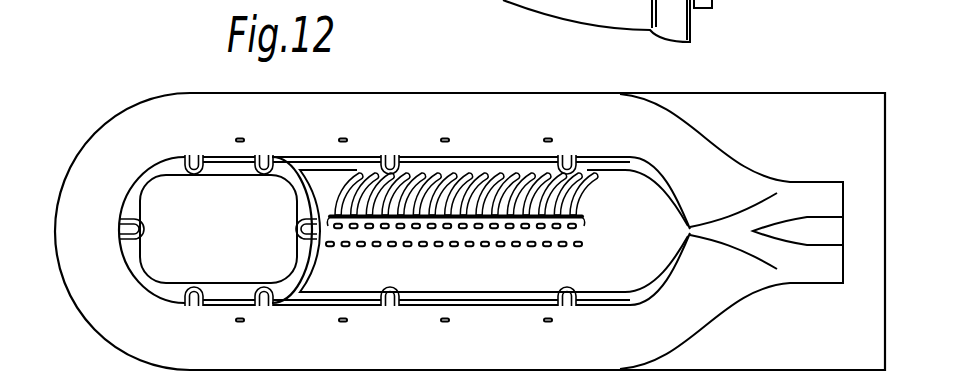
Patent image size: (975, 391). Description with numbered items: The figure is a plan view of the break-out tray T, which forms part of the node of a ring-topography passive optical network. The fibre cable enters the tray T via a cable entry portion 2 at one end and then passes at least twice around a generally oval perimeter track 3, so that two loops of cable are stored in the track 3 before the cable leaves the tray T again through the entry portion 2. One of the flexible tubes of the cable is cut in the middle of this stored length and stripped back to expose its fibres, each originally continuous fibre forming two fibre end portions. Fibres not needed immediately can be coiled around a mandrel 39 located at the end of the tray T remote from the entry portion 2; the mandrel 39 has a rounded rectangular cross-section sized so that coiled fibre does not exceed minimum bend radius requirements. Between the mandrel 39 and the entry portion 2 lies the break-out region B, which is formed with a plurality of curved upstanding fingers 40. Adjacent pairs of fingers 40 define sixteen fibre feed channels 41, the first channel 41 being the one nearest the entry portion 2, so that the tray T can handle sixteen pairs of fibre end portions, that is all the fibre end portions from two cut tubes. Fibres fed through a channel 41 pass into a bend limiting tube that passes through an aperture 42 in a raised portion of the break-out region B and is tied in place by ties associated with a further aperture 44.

The cable entry portion 2 is at (822, 268).
The perimeter track 3 is at (110, 322).
The mandrel 39 is at (230, 237).
The curved upstanding fingers 40 is at (502, 177).
The fibre feed channels 41 is at (479, 252).
The aperture 42 is at (578, 228).
The further aperture 44 is at (578, 249).
The break-out tray T is at (181, 85).
The break-out region B is at (435, 284).